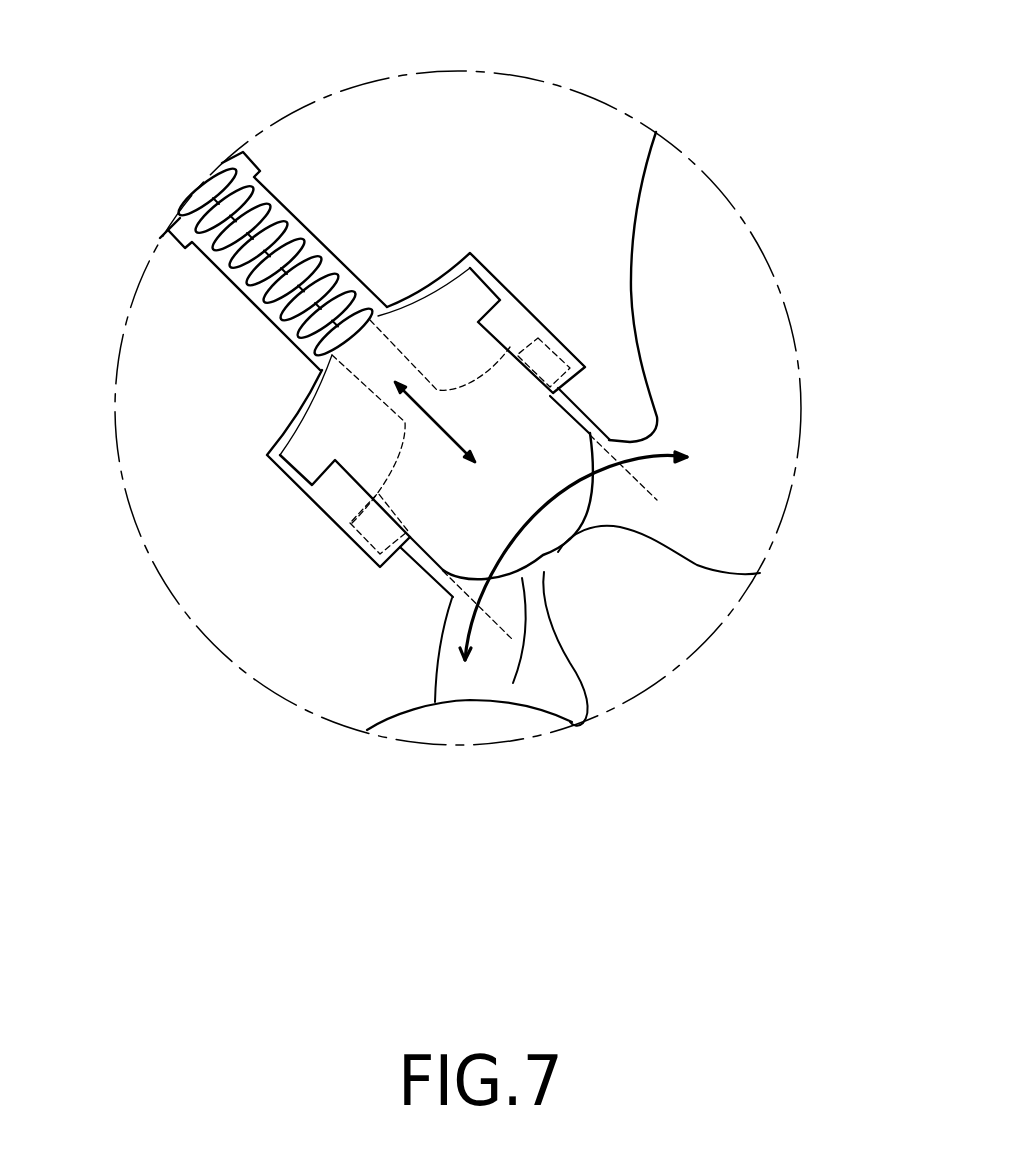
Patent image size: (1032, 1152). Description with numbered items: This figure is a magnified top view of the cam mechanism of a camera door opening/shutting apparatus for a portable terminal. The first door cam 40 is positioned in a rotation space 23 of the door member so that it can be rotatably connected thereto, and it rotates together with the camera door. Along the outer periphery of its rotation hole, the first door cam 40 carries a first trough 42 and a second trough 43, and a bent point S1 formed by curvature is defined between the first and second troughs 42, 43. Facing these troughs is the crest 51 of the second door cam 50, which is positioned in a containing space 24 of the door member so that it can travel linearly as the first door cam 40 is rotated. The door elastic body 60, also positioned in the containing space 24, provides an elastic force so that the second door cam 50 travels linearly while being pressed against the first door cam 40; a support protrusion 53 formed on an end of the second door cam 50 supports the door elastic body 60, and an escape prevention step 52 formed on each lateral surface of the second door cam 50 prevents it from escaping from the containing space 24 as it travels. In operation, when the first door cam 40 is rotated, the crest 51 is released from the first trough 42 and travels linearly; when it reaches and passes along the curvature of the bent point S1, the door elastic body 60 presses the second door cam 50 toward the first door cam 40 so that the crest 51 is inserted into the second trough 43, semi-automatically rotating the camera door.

The rotation space 23 is at (723, 247).
The containing space 24 is at (347, 503).
The first door cam 40 is at (660, 623).
The first trough 42 is at (580, 673).
The second trough 43 is at (700, 567).
The second door cam 50 is at (504, 347).
The crest 51 is at (513, 683).
The escape prevention step 52 is at (307, 463).
The support protrusion 53 is at (247, 285).
The door elastic body 60 is at (220, 190).
The bent point S1 is at (590, 533).